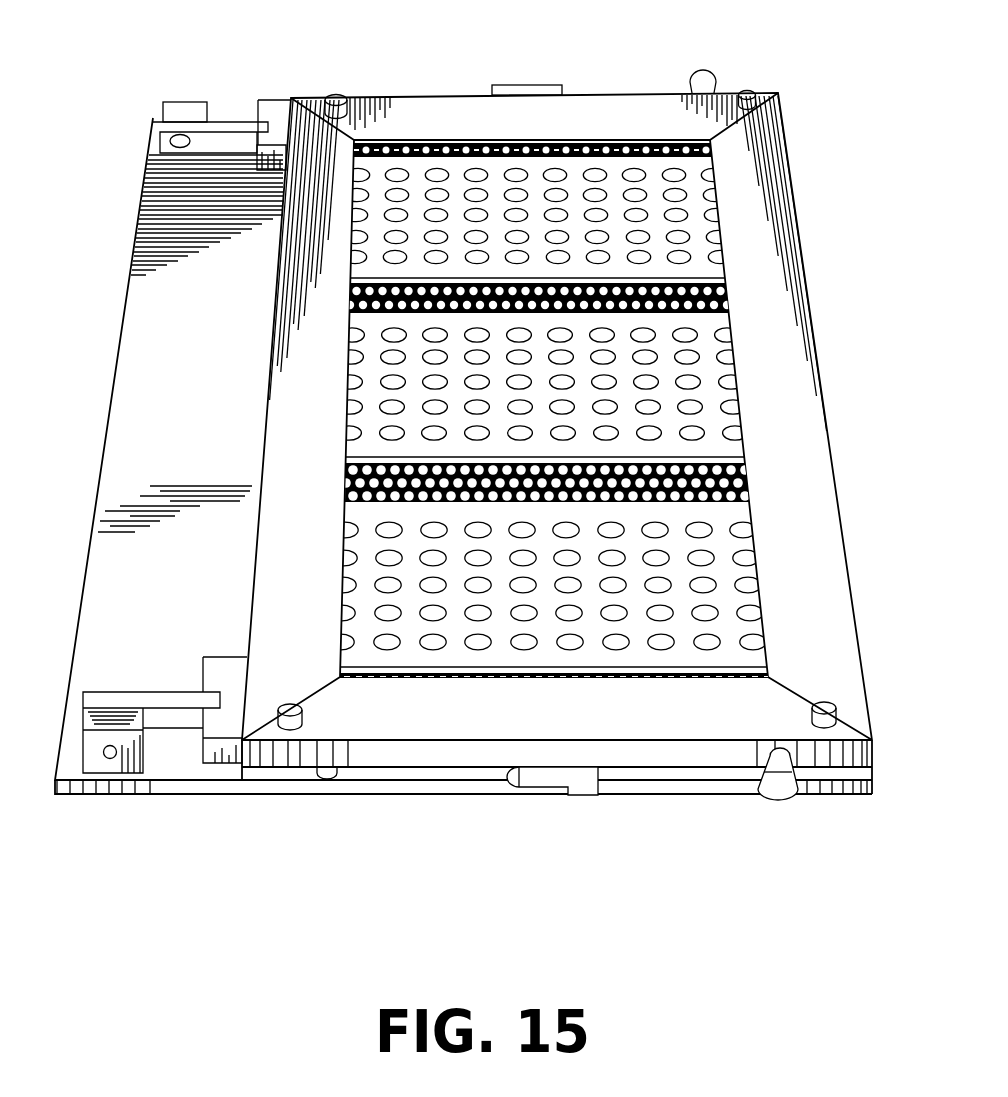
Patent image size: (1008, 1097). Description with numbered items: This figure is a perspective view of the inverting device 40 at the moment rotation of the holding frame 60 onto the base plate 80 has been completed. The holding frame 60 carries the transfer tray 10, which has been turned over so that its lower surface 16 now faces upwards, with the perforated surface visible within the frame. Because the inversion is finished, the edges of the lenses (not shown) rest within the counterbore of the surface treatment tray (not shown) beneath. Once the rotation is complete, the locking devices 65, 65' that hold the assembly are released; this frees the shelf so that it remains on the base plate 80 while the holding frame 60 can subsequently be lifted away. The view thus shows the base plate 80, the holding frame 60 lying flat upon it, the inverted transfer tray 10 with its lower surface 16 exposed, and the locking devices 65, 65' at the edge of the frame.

The transfer tray 10 is at (657, 168).
The lower surface 16 is at (702, 407).
The inverting device 40 is at (493, 746).
The holding frame 60 is at (821, 594).
The locking device 65 is at (527, 57).
The locking device 65' is at (578, 817).
The base plate 80 is at (843, 788).